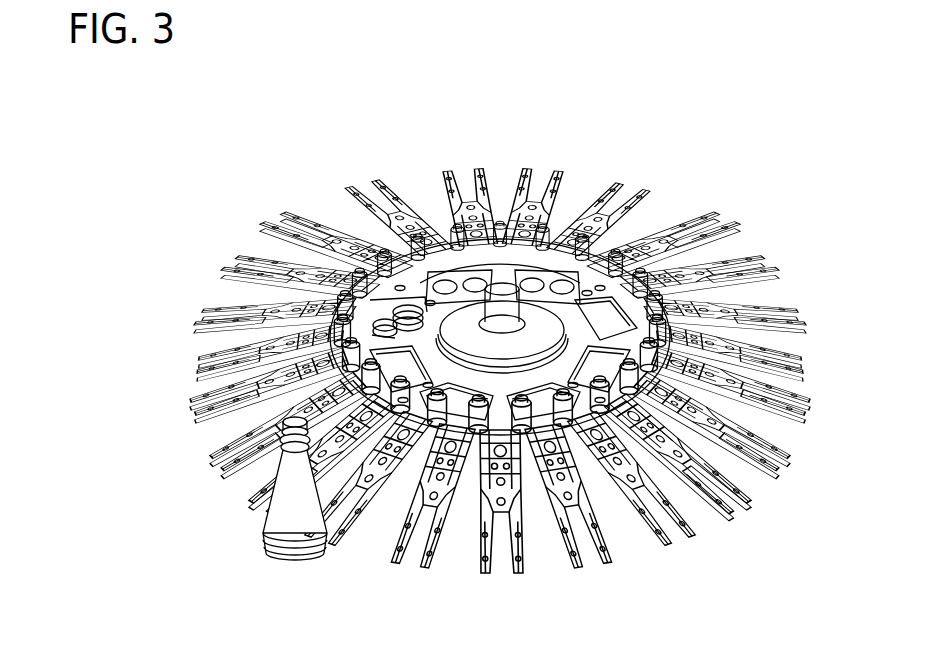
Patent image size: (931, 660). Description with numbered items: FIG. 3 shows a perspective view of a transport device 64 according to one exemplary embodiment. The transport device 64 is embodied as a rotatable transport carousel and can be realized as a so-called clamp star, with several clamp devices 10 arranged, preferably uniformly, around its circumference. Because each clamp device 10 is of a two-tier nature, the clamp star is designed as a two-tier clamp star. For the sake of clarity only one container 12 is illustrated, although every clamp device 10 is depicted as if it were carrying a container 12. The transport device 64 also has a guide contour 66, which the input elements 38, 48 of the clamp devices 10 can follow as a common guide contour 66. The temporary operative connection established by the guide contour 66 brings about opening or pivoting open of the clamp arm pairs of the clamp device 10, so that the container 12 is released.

The clamp device 10 is at (203, 481).
The container 12 is at (263, 522).
The transport device 64 is at (522, 78).
The input element 38 is at (420, 322).
The input element 48 is at (408, 307).
The guide contour 66 is at (593, 323).